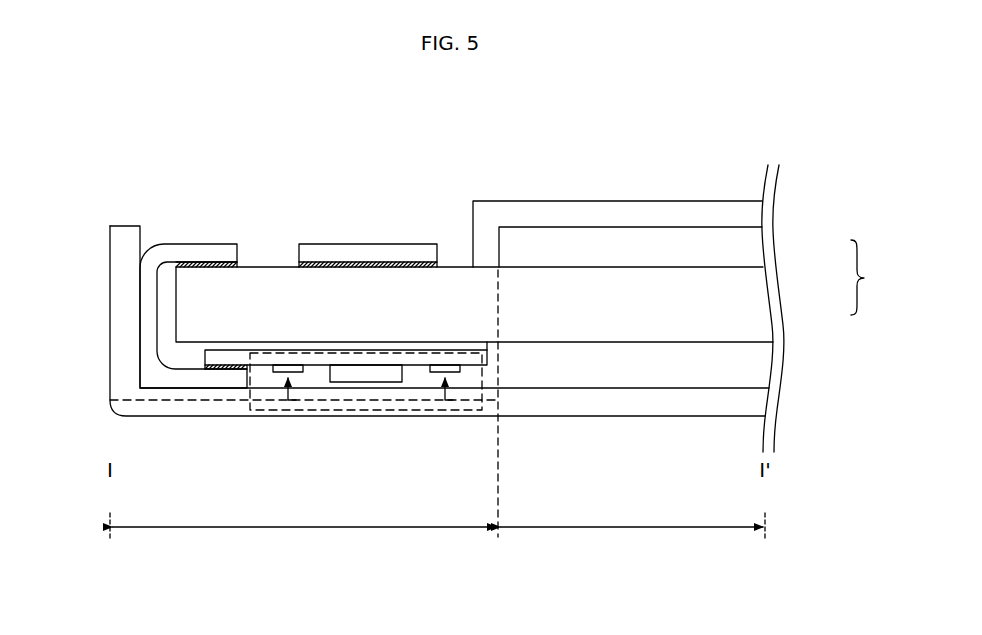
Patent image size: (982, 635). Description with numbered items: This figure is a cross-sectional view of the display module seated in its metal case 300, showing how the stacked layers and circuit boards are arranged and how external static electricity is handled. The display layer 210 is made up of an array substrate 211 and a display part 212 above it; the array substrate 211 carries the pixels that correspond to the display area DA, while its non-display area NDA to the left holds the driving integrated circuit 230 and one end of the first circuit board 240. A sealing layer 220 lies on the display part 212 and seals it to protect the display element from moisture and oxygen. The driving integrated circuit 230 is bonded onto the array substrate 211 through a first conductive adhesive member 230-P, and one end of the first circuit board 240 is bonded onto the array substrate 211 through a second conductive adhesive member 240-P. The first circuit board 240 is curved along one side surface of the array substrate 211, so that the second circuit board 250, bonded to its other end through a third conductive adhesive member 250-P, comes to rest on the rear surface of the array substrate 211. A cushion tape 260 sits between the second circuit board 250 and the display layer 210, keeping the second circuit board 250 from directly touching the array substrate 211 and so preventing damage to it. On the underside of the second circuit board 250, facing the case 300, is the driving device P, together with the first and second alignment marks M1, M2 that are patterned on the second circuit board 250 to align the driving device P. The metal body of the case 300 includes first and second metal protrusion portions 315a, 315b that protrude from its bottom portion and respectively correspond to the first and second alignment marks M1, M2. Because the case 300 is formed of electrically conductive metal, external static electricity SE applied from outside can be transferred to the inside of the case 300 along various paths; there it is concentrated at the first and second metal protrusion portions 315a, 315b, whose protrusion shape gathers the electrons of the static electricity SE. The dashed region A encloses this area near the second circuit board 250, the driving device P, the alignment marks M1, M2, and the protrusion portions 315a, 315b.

The display layer 210 is at (879, 277).
The array substrate 211 is at (760, 306).
The display part 212 is at (752, 251).
The sealing layer 220 is at (750, 214).
The driving integrated circuit 230 is at (385, 244).
The first conductive adhesive member 230-P is at (438, 265).
The first circuit board 240 is at (183, 243).
The second conductive adhesive member 240-P is at (240, 265).
The second circuit board 250 is at (210, 357).
The third conductive adhesive member 250-P is at (207, 368).
The cushion tape 260 is at (228, 347).
The case 300 is at (752, 405).
The external static electricity SE is at (97, 401).
The first alignment mark M1 is at (273, 372).
The second alignment mark M2 is at (430, 372).
The first metal protrusion portion 315a is at (300, 379).
The second metal protrusion portion 315b is at (460, 379).
The driving device P is at (360, 373).
The sensing area A is at (382, 412).
The non-display area NDA is at (304, 541).
The display area DA is at (631, 541).